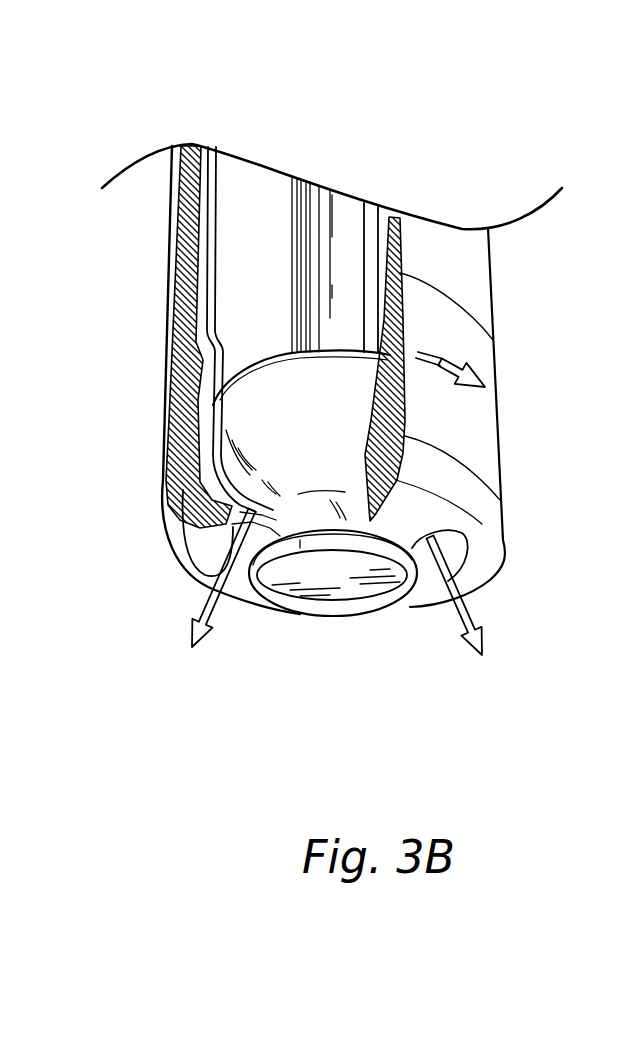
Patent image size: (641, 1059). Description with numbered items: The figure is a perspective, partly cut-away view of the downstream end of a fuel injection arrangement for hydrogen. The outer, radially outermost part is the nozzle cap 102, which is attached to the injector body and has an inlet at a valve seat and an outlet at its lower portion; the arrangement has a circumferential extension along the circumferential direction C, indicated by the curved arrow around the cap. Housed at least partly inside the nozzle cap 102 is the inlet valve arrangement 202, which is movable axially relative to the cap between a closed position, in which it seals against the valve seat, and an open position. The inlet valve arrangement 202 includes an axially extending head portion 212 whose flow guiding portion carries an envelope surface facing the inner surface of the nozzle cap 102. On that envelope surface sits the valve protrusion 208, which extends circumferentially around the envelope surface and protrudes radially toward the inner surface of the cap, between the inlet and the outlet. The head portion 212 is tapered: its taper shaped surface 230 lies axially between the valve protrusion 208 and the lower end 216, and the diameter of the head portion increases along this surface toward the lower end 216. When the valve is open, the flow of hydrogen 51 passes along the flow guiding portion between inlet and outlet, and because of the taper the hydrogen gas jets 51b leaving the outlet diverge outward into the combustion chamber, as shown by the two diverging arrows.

The nozzle cap 102 is at (468, 420).
The inlet valve arrangement 202 is at (218, 423).
The valve protrusion 208 is at (212, 398).
The head portion 212 is at (273, 508).
The lower end 216 is at (353, 600).
The taper shaped surface 230 is at (328, 514).
The flow of hydrogen 51 is at (208, 602).
The hydrogen gas jets 51b is at (463, 605).
The circumferential direction C is at (452, 352).